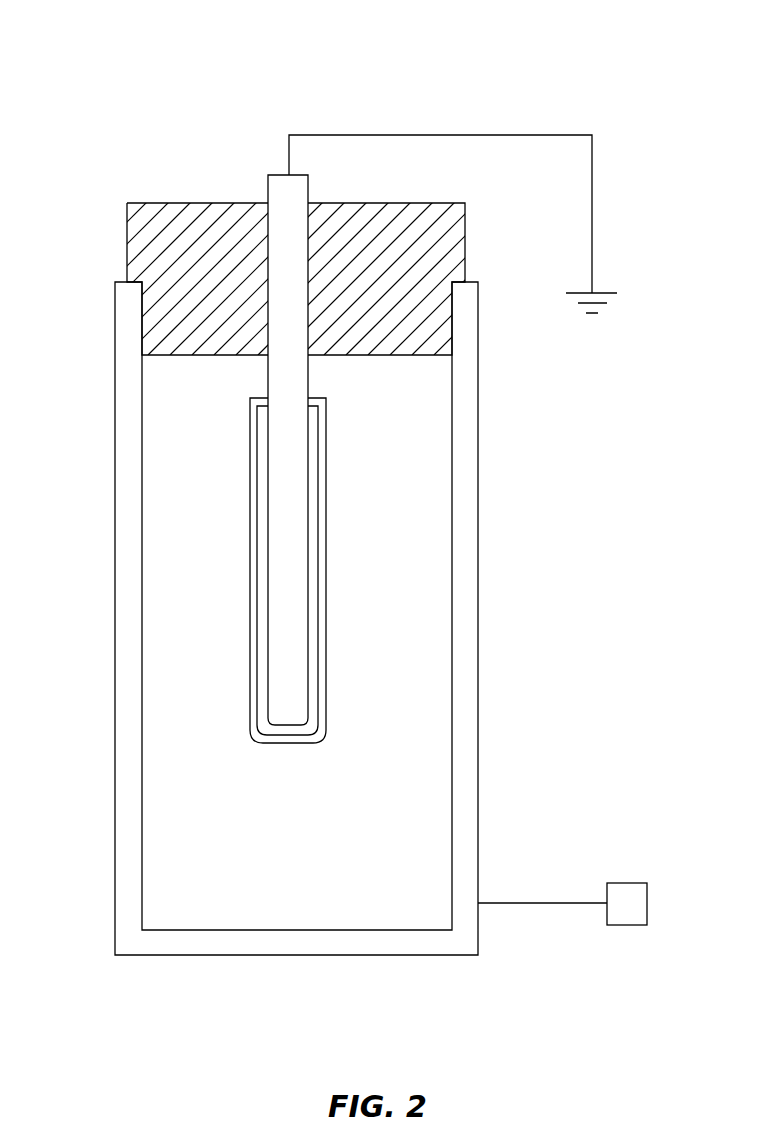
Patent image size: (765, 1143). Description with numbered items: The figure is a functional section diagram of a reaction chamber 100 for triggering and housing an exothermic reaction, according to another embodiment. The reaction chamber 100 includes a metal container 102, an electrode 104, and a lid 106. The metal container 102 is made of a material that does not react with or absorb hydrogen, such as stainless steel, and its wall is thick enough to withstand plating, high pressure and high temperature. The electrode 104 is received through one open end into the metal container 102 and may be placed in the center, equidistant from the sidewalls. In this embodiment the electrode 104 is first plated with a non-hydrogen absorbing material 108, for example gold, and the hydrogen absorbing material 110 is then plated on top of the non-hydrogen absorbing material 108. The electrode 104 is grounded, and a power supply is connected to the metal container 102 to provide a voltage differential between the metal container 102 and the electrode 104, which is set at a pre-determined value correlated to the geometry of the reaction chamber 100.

The reaction chamber 100 is at (525, 62).
The metal container 102 is at (462, 760).
The electrode 104 is at (293, 580).
The lid 106 is at (192, 237).
The non-hydrogen absorbing material 108 is at (297, 730).
The hydrogen absorbing material 110 is at (291, 741).